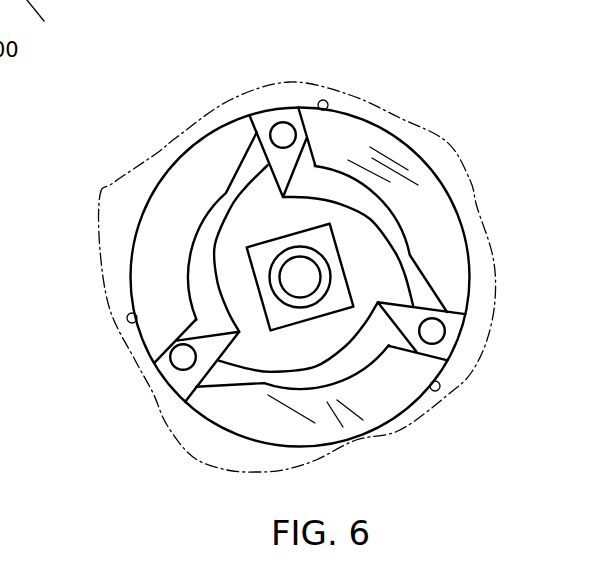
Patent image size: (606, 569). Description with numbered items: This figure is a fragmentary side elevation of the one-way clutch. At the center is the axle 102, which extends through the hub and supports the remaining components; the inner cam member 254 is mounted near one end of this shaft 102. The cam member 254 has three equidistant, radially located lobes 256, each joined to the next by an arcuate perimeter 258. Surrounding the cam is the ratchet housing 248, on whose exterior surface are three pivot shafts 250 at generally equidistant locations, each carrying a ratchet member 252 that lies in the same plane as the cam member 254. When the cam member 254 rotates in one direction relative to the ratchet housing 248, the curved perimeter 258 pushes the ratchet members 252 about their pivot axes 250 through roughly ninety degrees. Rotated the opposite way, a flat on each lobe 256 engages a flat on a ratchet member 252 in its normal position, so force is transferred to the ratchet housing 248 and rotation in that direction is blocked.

The axle 102 is at (300, 277).
The ratchet housing 248 is at (402, 123).
The pivot shafts 250 is at (283, 135).
The ratchet members 252 is at (252, 117).
The inner cam member 254 is at (348, 222).
The lobes 256 is at (254, 194).
The arcuate perimeter 258 is at (296, 380).